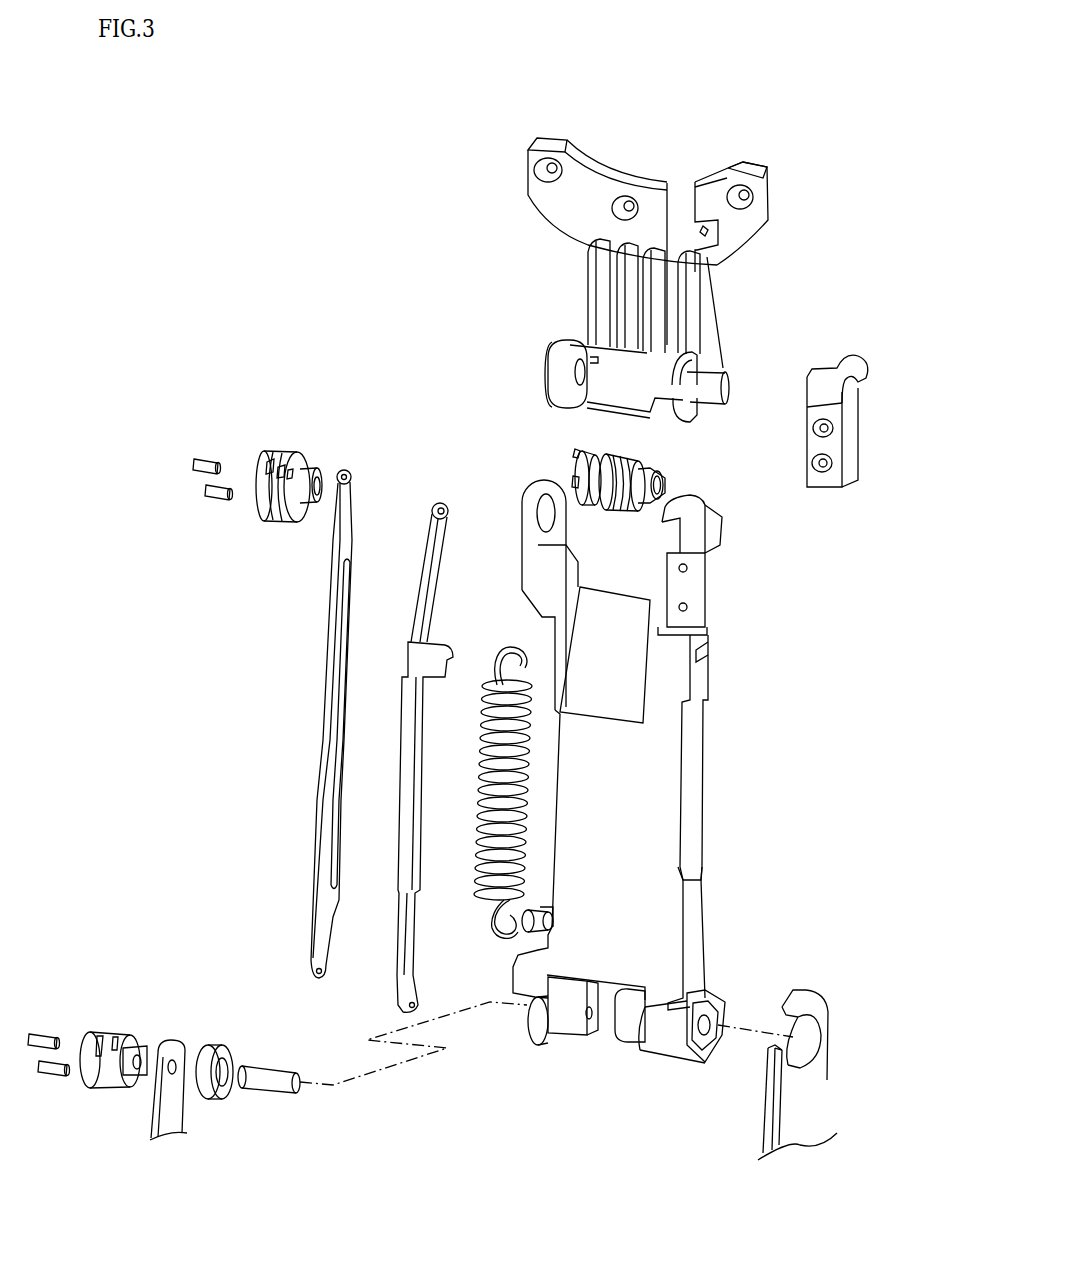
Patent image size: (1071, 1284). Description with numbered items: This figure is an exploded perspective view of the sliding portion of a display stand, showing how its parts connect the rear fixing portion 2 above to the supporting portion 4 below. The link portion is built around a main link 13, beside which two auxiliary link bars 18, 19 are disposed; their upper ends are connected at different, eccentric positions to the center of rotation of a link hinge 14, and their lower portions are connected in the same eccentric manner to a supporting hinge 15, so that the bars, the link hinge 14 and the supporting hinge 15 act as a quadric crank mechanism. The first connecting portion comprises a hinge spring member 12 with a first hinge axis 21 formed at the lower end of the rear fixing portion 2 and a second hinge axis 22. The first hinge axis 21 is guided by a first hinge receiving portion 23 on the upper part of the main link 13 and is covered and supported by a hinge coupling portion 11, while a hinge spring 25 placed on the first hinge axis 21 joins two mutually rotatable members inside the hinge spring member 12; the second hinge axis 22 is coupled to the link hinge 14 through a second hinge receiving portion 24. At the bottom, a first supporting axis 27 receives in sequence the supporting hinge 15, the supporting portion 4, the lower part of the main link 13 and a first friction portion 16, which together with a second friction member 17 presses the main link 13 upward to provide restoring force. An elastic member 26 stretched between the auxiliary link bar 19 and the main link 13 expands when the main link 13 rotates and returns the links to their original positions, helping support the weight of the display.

The rear fixing portion 2 is at (590, 190).
The first hinge axis 21 is at (710, 364).
The hinge coupling portion 11 is at (868, 364).
The link hinge 14 is at (285, 453).
The second hinge axis 22 is at (568, 473).
The hinge spring 25 is at (640, 455).
The second hinge receiving portion 24 is at (527, 512).
The hinge spring member 12 is at (620, 519).
The first hinge receiving portion 23 is at (700, 535).
The main link 13 is at (662, 803).
The first friction portion 16 is at (572, 1020).
The second friction member 17 is at (630, 1028).
The supporting portion 4 is at (807, 1103).
The supporting hinge 15 is at (97, 1027).
The first supporting axis 27 is at (267, 1075).
The auxiliary link bar 18 is at (322, 687).
The auxiliary link bar 19 is at (404, 800).
The elastic member 26 is at (487, 803).